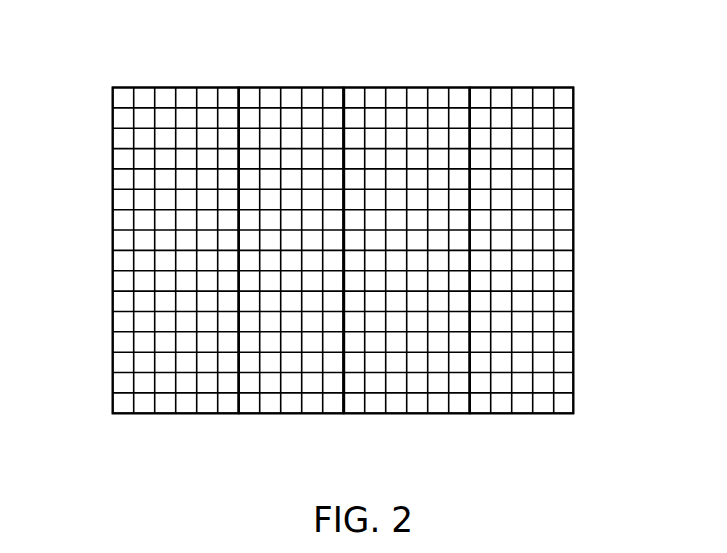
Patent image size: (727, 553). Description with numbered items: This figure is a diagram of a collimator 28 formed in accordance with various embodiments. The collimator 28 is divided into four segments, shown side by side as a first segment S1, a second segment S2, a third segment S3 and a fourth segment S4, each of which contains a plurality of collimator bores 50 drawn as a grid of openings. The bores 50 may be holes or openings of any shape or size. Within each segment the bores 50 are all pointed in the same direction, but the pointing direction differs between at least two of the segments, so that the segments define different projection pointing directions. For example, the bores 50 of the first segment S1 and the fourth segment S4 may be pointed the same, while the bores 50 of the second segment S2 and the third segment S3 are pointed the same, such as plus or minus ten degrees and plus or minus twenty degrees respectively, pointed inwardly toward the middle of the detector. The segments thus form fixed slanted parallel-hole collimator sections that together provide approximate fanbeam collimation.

The collimator 28 is at (344, 268).
The collimator bores 50 is at (123, 95).
The first segment S1 is at (233, 424).
The second segment S2 is at (339, 424).
The third segment S3 is at (465, 424).
The fourth segment S4 is at (573, 424).